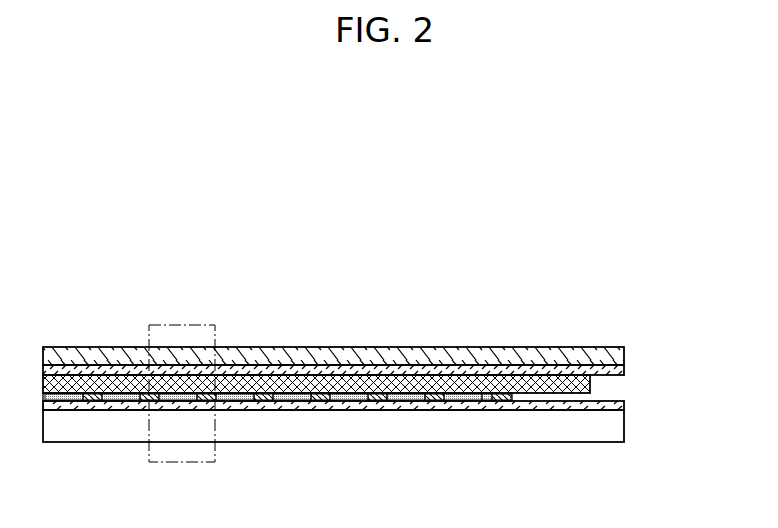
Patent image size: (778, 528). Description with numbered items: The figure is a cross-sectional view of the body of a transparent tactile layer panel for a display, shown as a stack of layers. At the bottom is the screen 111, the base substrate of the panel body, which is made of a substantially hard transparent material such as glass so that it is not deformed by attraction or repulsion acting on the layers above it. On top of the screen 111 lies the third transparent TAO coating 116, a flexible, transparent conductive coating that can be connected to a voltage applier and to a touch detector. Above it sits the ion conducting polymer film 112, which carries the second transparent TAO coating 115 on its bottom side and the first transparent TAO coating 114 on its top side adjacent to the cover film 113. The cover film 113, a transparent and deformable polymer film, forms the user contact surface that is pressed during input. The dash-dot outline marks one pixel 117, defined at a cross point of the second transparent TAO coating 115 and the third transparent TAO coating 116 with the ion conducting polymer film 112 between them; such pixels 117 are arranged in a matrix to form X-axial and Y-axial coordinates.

The screen 111 is at (618, 428).
The ion conducting polymer film 112 is at (590, 383).
The cover film 113 is at (332, 355).
The first transparent TAO coating 114 is at (613, 372).
The second transparent TAO coating 115 is at (500, 400).
The third transparent TAO coating 116 is at (553, 405).
The pixel 117 is at (180, 463).